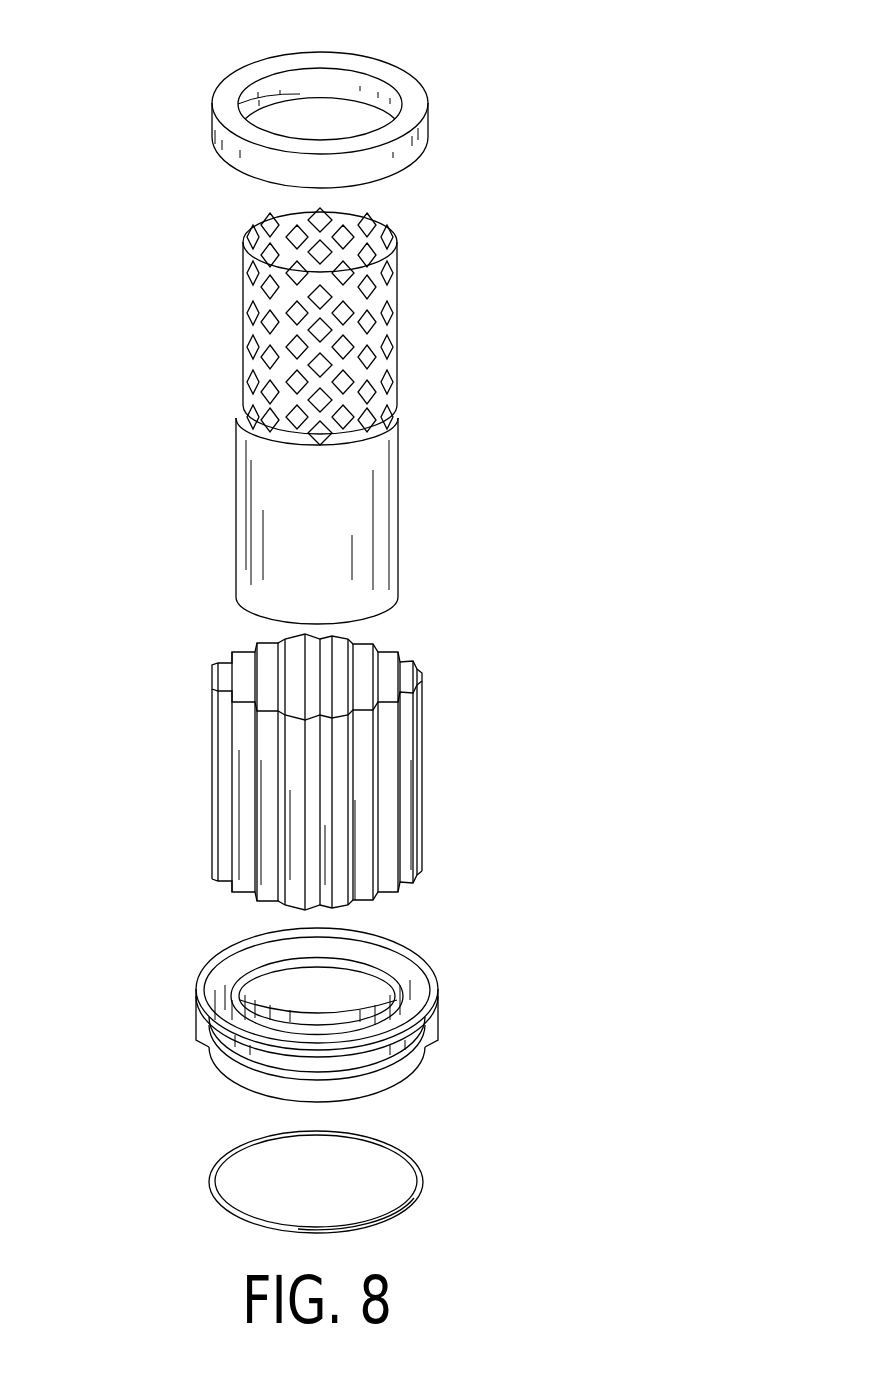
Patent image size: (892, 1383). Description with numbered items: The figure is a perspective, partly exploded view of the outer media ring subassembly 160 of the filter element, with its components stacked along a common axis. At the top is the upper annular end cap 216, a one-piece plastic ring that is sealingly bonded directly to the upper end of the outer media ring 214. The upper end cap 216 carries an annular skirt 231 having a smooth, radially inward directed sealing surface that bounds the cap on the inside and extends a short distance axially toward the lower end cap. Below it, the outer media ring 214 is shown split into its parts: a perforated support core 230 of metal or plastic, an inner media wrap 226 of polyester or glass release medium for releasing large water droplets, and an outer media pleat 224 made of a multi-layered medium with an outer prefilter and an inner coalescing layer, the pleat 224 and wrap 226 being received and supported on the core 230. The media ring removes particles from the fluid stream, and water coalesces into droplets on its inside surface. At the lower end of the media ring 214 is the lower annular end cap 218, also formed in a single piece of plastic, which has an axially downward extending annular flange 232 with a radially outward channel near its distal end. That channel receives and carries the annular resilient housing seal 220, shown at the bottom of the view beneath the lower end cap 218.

The outer media ring subassembly 160 is at (506, 242).
The outer media ring 214 is at (443, 473).
The upper annular end cap 216 is at (423, 101).
The lower annular end cap 218 is at (425, 970).
The annular resilient housing seal 220 is at (215, 1170).
The outer media pleat 224 is at (216, 780).
The inner media wrap 226 is at (242, 518).
The perforated support core 230 is at (245, 380).
The annular skirt 231 is at (271, 88).
The annular flange 232 is at (405, 1068).